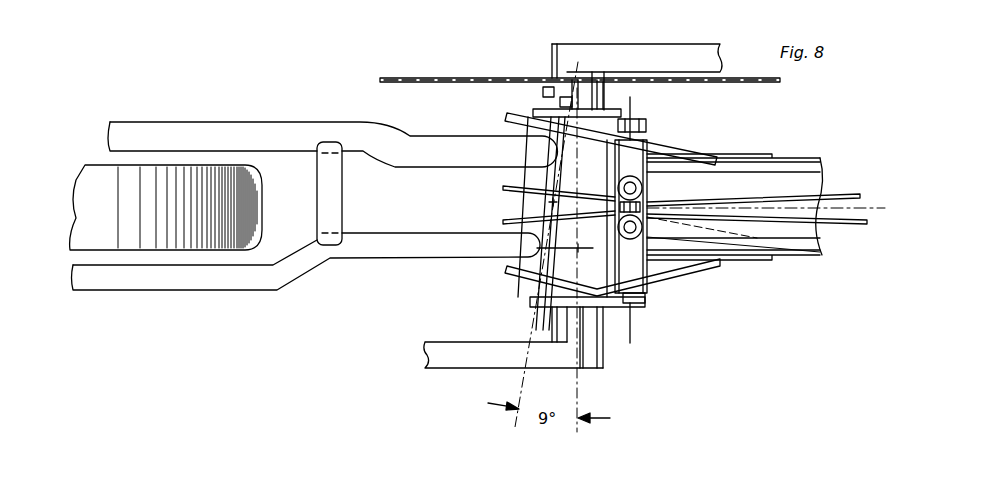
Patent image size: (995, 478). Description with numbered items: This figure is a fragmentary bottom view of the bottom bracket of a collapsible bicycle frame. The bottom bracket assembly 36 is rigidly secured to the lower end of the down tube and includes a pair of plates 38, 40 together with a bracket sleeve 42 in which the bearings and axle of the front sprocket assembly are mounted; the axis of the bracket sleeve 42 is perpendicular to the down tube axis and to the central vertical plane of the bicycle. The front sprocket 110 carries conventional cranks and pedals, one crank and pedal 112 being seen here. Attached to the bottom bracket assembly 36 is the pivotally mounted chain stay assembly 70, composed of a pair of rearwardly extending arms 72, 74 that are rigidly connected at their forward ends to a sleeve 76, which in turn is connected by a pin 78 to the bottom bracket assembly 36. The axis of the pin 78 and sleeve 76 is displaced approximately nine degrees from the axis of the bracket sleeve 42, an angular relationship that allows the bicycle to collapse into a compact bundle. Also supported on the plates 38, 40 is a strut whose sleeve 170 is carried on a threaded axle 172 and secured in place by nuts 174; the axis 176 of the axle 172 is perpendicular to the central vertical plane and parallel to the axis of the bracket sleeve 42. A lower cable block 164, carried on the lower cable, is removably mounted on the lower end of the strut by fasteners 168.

The chain stay assembly 70 is at (247, 118).
The arm 72 is at (325, 136).
The arm 74 is at (300, 262).
The sleeve 76 is at (545, 184).
The bracket sleeve 42 is at (527, 258).
The pin 78 is at (528, 300).
The front sprocket 110 is at (465, 78).
The crank and pedal 112 is at (672, 52).
The nut 174 is at (648, 126).
The bottom bracket assembly 36 is at (700, 138).
The plate 38 is at (673, 153).
The sleeve 170 is at (700, 157).
The fastener 168 is at (647, 197).
The lower cable block 164 is at (688, 266).
The plate 40 is at (672, 279).
The threaded axle 172 is at (632, 343).
The axis 176 is at (636, 348).